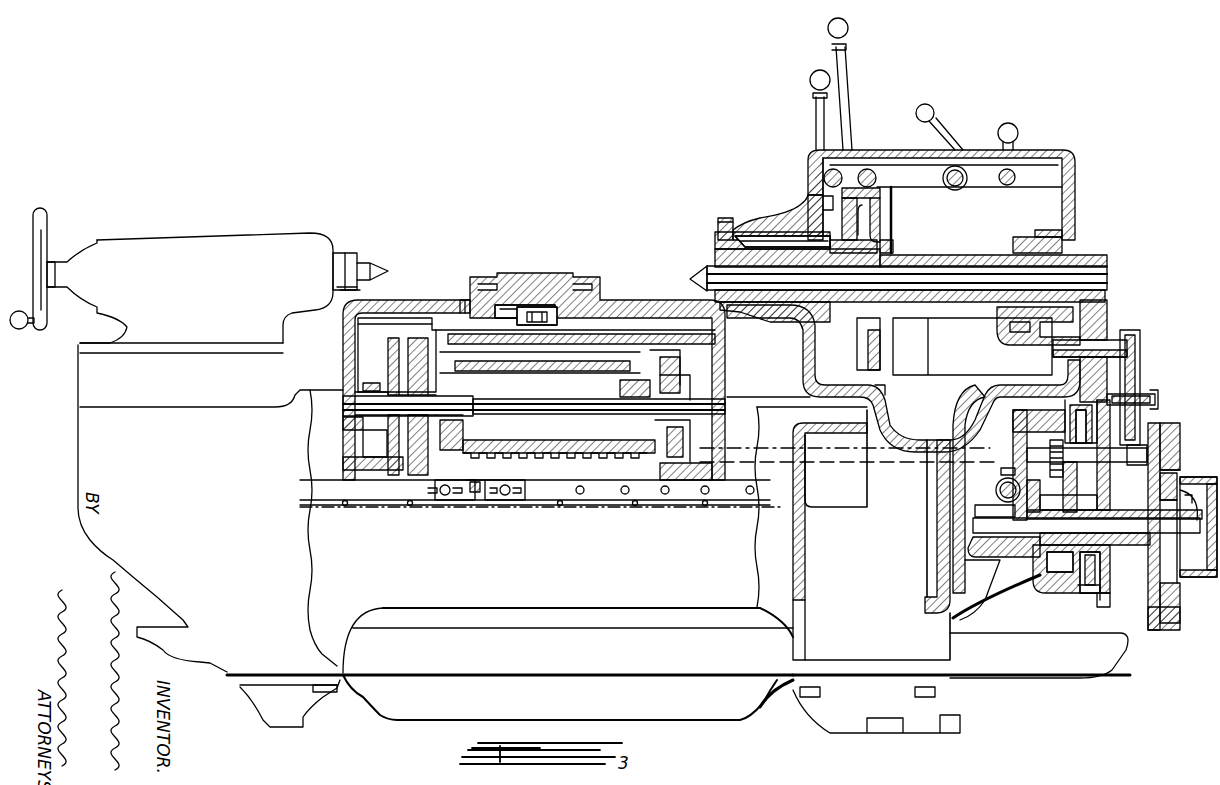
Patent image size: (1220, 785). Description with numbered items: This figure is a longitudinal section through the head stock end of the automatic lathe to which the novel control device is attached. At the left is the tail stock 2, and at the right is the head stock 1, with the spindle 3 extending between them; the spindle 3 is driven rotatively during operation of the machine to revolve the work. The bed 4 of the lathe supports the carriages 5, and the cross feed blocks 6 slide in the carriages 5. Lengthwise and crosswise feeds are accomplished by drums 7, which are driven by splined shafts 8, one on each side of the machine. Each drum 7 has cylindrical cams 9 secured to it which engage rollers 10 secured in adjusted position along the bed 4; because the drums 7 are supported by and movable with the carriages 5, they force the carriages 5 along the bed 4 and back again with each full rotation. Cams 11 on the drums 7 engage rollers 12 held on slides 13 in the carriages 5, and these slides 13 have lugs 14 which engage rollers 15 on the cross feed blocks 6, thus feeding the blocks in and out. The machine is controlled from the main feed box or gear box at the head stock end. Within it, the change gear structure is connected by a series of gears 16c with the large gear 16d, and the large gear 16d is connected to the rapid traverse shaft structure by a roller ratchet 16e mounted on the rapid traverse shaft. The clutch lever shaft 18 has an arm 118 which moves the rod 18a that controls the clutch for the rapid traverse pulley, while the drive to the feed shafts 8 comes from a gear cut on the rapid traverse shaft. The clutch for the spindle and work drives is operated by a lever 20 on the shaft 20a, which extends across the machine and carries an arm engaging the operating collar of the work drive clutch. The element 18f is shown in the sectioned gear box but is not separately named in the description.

The head stock 1 is at (780, 226).
The tail stock 2 is at (300, 275).
The spindle 3 is at (712, 268).
The bed 4 is at (472, 535).
The carriage 5 is at (355, 355).
The cross feed block 6 is at (553, 292).
The drum 7 is at (537, 482).
The splined shaft 8 is at (887, 457).
The cylindrical cam 9 is at (483, 482).
The roller 10 is at (455, 482).
The cam 11 is at (622, 350).
The roller 12 is at (648, 350).
The slide 13 is at (585, 336).
The lug 14 is at (515, 305).
The roller 15 is at (540, 318).
The series of gears 16c is at (1110, 320).
The large gear 16d is at (1060, 565).
The roller ratchet 16e is at (1082, 565).
The clutch lever shaft 18 is at (1008, 482).
The rod 18a is at (1012, 560).
The pin 18f is at (1100, 428).
The lever 20 is at (850, 140).
The shaft 20a is at (873, 175).
The arm 118 is at (1003, 510).